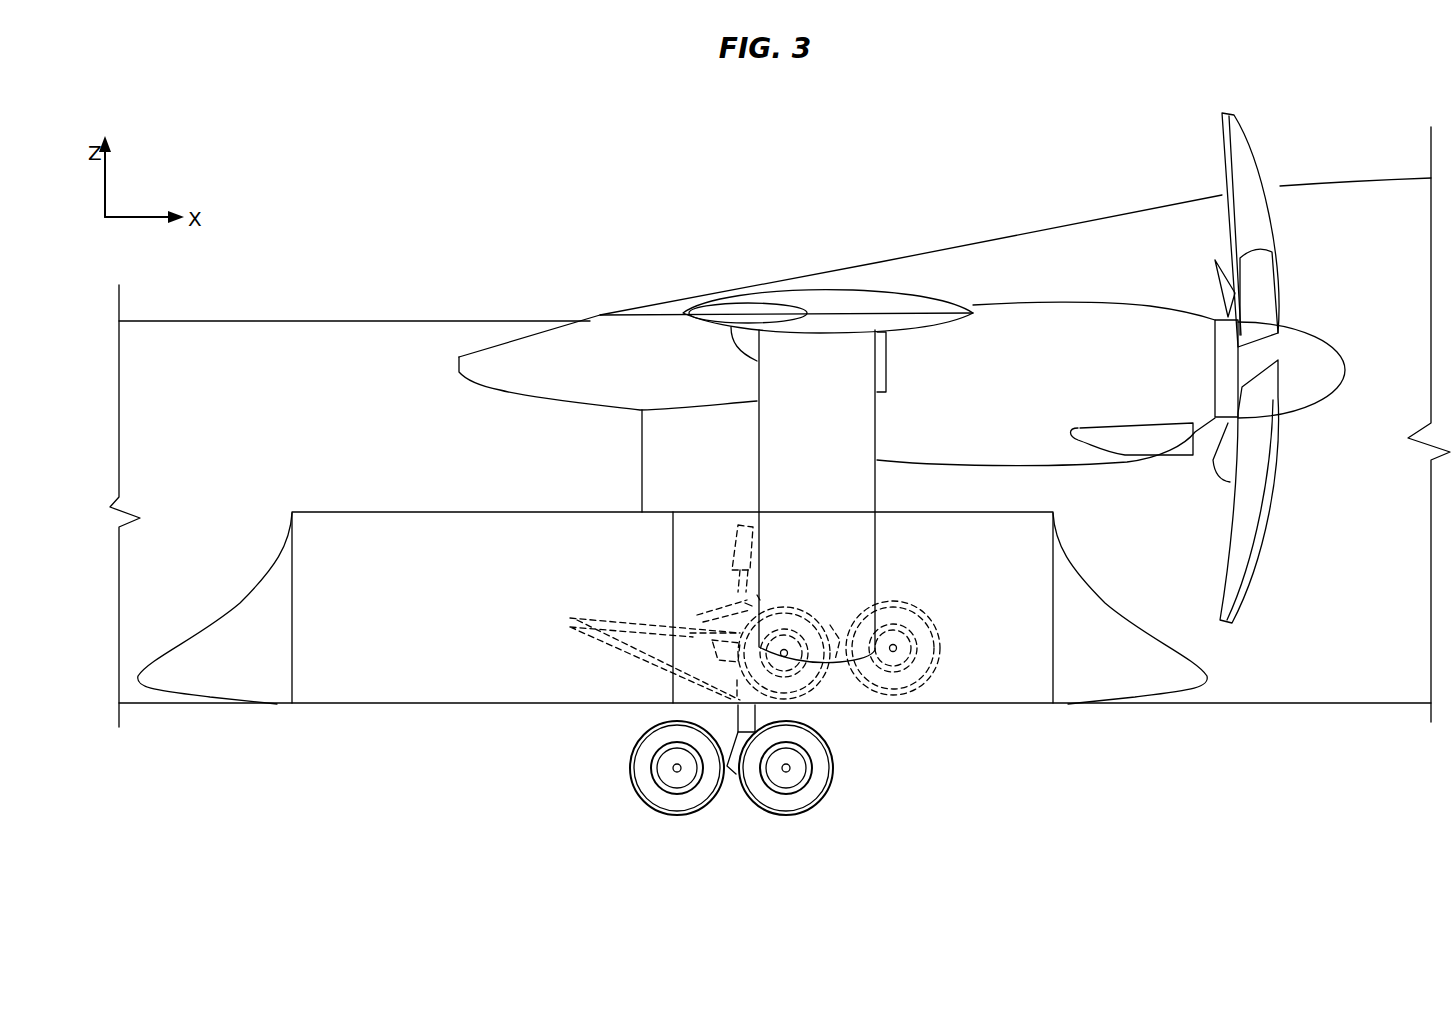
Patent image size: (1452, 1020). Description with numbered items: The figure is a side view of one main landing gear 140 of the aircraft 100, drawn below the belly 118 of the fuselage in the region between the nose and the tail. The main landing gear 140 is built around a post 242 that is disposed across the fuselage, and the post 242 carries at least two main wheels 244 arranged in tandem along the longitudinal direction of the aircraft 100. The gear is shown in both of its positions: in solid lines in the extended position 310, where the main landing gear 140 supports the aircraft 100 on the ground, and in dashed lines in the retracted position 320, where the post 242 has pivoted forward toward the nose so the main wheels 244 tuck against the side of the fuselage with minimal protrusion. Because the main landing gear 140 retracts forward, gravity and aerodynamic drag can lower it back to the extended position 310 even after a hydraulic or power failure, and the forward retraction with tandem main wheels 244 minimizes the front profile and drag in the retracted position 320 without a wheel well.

The aircraft 100 is at (466, 195).
The belly 118 is at (1030, 707).
The main landing gear 140 is at (700, 852).
The post 242 is at (757, 712).
The main wheel 244 is at (630, 778).
The extended position 310 is at (844, 862).
The retracted position 320 is at (912, 718).